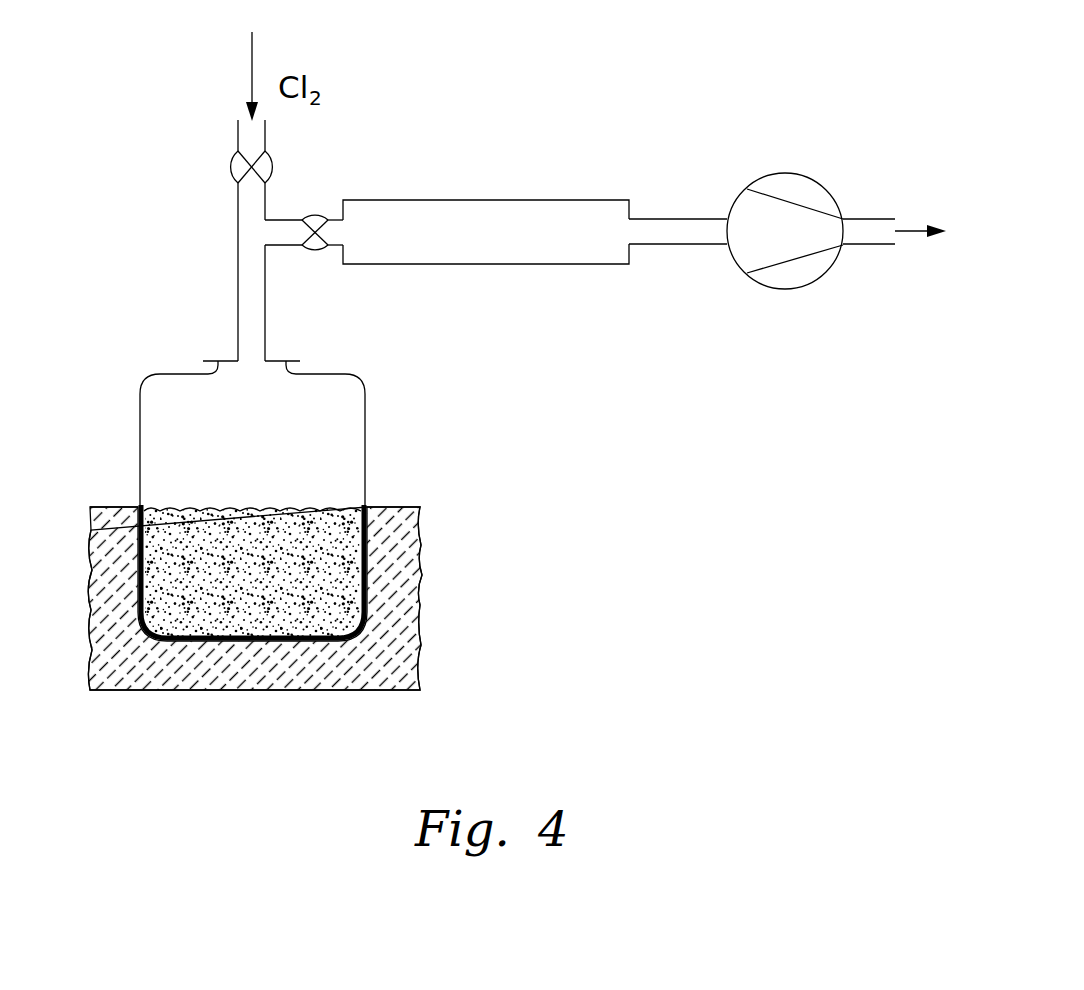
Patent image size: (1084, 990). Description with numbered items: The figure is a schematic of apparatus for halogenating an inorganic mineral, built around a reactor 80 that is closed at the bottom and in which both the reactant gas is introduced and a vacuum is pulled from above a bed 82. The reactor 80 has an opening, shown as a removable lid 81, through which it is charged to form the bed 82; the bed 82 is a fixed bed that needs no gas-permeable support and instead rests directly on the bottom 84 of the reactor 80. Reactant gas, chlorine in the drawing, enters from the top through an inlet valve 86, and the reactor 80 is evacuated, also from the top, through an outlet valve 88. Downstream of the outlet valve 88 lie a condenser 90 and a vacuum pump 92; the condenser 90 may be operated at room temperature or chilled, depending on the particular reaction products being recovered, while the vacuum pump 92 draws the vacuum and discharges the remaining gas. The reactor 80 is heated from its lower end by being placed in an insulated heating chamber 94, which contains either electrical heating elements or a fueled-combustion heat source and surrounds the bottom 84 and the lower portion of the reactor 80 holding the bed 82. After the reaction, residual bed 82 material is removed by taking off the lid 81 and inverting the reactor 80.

The reactor 80 is at (405, 395).
The removable lid 81 is at (210, 360).
The bed 82 is at (308, 543).
The bottom 84 is at (230, 632).
The inlet valve 86 is at (231, 167).
The outlet valve 88 is at (316, 212).
The condenser 90 is at (484, 200).
The vacuum pump 92 is at (792, 289).
The insulated heating chamber 94 is at (402, 594).